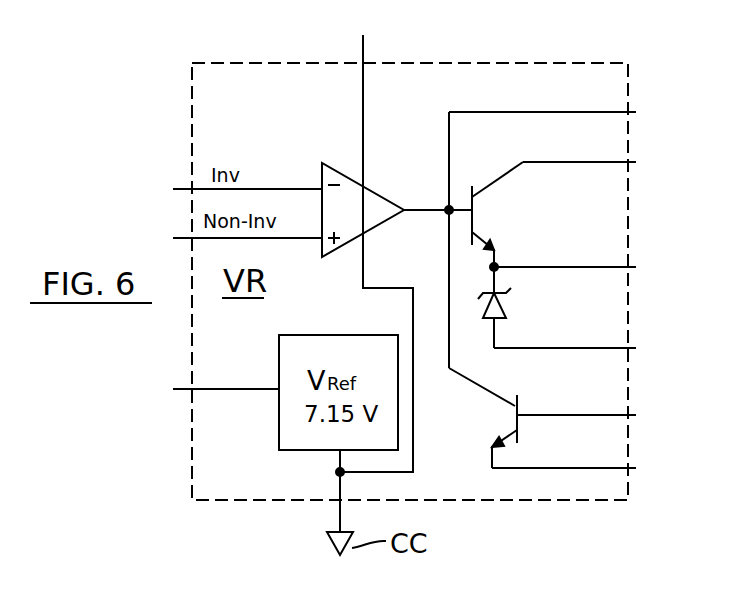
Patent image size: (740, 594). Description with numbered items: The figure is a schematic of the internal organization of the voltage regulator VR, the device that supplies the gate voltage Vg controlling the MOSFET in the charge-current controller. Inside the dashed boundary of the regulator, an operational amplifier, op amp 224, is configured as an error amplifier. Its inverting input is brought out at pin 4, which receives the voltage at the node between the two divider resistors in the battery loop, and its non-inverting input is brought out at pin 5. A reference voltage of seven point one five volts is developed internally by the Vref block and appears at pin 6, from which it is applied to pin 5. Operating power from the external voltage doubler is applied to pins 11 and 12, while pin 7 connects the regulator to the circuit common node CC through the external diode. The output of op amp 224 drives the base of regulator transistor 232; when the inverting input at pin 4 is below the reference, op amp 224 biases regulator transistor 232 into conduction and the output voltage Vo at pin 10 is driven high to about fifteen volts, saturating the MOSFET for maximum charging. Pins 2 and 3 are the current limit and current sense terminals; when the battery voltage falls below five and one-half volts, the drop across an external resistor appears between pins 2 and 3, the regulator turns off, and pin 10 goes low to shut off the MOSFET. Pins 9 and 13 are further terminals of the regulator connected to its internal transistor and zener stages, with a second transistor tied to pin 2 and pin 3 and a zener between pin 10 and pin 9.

The current limit terminal 2 is at (585, 399).
The current sense terminal 3 is at (573, 451).
The inverting input pin 4 is at (242, 176).
The non-inverting input pin 5 is at (242, 224).
The reference voltage pin 6 is at (221, 376).
The regulator common pin 7 is at (346, 502).
The regulator pin 9 is at (574, 331).
The output voltage pin 10 is at (580, 251).
The supply pin 11 is at (596, 146).
The supply pin 12 is at (376, 251).
The regulator pin 13 is at (558, 97).
The op amp 224 is at (338, 170).
The regulator transistor 232 is at (484, 211).